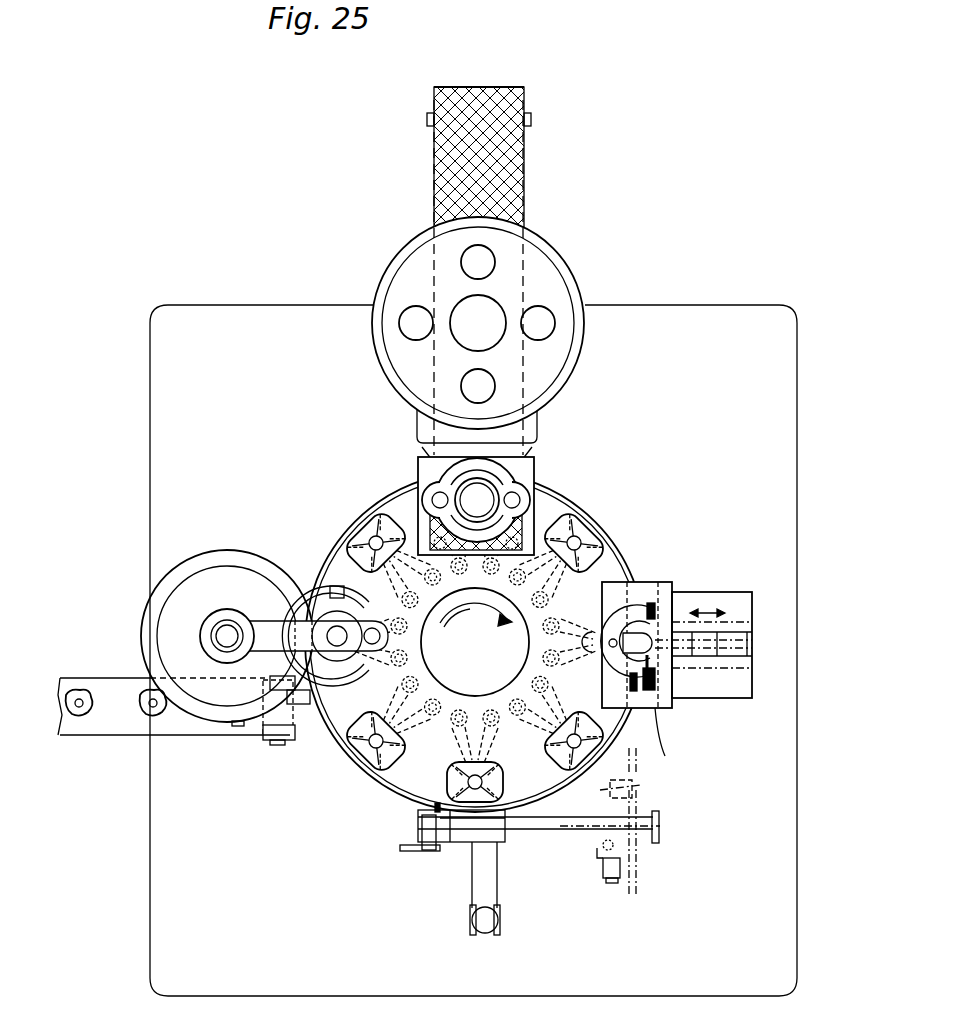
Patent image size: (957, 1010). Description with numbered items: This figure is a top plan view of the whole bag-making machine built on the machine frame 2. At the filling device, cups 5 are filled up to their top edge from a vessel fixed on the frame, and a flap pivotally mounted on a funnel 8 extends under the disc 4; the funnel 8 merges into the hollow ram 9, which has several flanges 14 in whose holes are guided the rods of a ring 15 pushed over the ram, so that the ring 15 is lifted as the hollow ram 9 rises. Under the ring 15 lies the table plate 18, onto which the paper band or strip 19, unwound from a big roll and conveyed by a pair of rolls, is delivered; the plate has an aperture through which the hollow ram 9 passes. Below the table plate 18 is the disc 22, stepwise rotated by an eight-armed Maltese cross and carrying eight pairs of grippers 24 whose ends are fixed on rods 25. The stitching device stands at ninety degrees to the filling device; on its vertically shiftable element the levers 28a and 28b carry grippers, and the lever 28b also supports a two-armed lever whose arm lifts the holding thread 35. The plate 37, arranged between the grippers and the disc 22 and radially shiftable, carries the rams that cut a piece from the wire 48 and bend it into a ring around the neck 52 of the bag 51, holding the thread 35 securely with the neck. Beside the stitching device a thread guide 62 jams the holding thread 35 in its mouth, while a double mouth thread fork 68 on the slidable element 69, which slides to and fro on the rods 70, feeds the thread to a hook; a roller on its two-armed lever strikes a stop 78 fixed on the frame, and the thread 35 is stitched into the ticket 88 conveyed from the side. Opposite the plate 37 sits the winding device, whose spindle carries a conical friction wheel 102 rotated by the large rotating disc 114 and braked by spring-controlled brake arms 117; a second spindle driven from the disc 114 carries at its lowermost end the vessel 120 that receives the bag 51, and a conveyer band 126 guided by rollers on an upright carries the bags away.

The machine frame 2 is at (195, 385).
The disc 4 is at (540, 262).
The cups 5 is at (538, 324).
The funnel 8 is at (537, 430).
The hollow ram 9 is at (453, 495).
The flanges 14 is at (520, 480).
The ring 15 is at (462, 467).
The table plate 18 is at (533, 482).
The paper band or strip 19 is at (515, 98).
The disc 22 is at (385, 778).
The grippers 24 is at (413, 720).
The rods 25 is at (547, 657).
The lever 28a is at (655, 605).
The lever 28b is at (655, 690).
The holding thread 35 is at (442, 803).
The plate 37 is at (672, 600).
The wire 48 is at (663, 735).
The bag 51 is at (148, 695).
The neck 52 is at (575, 541).
The thread guide 62 is at (627, 685).
The thread fork 68 is at (505, 815).
The slidable element 69 is at (425, 853).
The rods 70 is at (500, 830).
The stop 78 is at (613, 882).
The ticket 88 is at (475, 918).
The conical friction wheel 102 is at (336, 612).
The large rotating disc 114 is at (190, 598).
The brake arms 117 is at (326, 602).
The vessel 120 is at (305, 702).
The conveyer band 126 is at (118, 737).